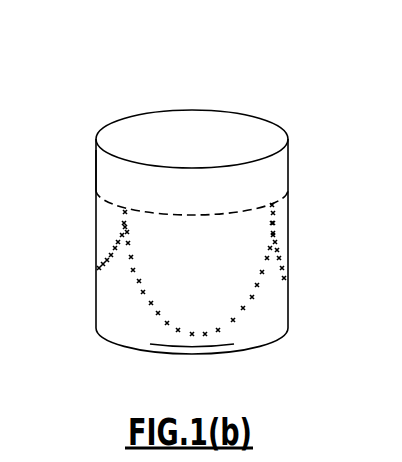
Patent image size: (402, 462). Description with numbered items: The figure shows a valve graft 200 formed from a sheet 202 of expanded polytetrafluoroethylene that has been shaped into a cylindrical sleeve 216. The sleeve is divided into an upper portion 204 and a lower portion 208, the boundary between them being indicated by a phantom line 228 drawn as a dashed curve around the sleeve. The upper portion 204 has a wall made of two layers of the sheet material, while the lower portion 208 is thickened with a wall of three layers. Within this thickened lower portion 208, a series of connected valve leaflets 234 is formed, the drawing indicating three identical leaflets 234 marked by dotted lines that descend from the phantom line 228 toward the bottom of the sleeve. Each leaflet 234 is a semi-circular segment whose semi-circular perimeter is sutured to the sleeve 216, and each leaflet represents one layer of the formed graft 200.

The valve graft 200 is at (191, 220).
The sheet 202 is at (288, 183).
The upper portion 204 is at (105, 176).
The phantom line 228 is at (272, 203).
The valve leaflets 234 is at (104, 247).
The cylindrical sleeve 216 is at (267, 343).
The lower portion 208 is at (132, 333).